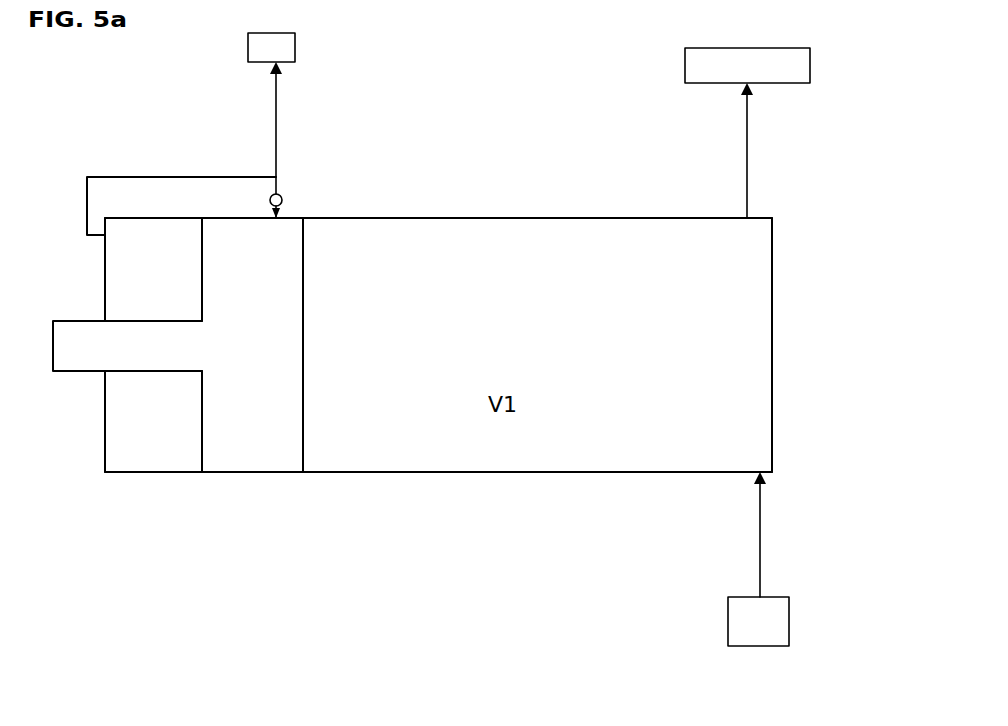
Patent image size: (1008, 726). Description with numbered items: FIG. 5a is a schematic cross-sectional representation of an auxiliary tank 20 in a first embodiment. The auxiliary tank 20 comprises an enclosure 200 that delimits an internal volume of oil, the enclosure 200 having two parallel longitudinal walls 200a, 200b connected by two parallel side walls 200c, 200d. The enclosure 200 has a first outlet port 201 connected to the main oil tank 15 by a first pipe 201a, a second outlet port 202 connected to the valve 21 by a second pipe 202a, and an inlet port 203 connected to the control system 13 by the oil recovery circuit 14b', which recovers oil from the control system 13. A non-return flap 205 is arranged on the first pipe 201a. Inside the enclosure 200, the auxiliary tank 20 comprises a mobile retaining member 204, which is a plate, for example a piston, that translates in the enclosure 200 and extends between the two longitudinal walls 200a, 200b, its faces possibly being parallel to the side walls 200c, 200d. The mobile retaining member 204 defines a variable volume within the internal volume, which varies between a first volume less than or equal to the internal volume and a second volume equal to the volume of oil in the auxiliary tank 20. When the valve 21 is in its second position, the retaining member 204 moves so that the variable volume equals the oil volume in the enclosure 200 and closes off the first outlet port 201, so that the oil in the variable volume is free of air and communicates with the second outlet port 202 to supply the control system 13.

The control system 13 is at (770, 633).
The oil recovery circuit 14b' is at (806, 544).
The main oil tank 15 is at (290, 50).
The auxiliary tank 20 is at (848, 139).
The valve 21 is at (810, 63).
The enclosure 200 is at (438, 349).
The longitudinal wall 200a is at (630, 218).
The longitudinal wall 200b is at (500, 475).
The side wall 200c is at (772, 378).
The side wall 200d is at (105, 440).
The first outlet port 201 is at (283, 214).
The first pipe 201a is at (276, 120).
The second outlet port 202 is at (755, 215).
The second pipe 202a is at (748, 122).
The inlet port 203 is at (770, 478).
The retaining member 204 is at (306, 441).
The non-return flap 205 is at (269, 200).